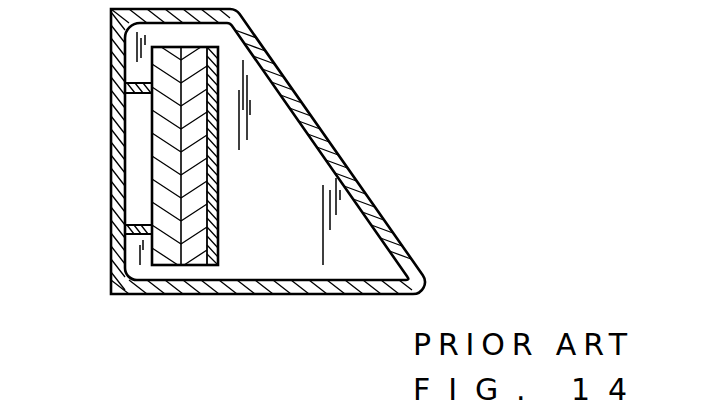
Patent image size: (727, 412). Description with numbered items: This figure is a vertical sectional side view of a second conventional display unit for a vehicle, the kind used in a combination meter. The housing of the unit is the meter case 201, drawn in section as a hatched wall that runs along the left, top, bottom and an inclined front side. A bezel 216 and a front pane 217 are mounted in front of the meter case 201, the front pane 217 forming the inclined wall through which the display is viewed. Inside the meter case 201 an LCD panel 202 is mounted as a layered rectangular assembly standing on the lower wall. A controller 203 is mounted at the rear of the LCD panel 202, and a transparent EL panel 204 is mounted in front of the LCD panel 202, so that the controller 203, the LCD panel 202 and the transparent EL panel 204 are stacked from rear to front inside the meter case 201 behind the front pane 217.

The meter case 201 is at (110, 213).
The LCD panel 202 is at (206, 212).
The controller 203 is at (163, 267).
The transparent EL panel 204 is at (218, 253).
The bezel 216 is at (337, 295).
The front pane 217 is at (330, 136).